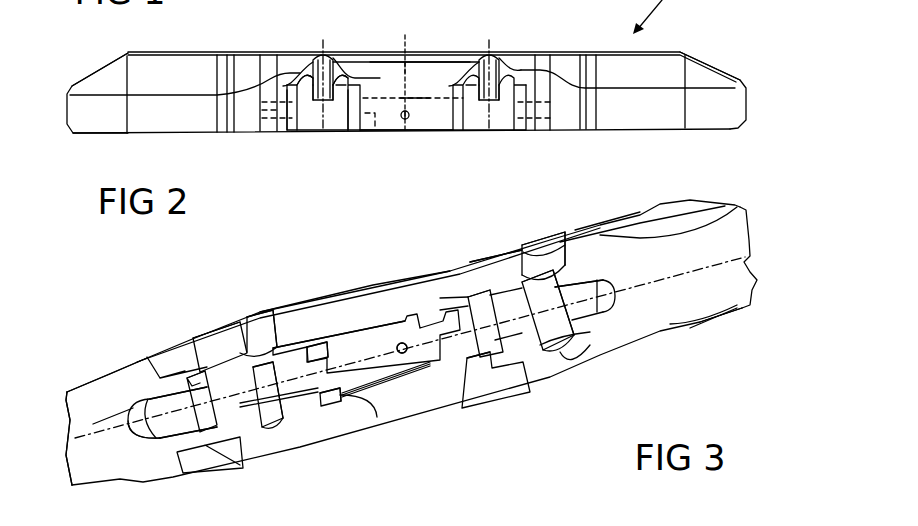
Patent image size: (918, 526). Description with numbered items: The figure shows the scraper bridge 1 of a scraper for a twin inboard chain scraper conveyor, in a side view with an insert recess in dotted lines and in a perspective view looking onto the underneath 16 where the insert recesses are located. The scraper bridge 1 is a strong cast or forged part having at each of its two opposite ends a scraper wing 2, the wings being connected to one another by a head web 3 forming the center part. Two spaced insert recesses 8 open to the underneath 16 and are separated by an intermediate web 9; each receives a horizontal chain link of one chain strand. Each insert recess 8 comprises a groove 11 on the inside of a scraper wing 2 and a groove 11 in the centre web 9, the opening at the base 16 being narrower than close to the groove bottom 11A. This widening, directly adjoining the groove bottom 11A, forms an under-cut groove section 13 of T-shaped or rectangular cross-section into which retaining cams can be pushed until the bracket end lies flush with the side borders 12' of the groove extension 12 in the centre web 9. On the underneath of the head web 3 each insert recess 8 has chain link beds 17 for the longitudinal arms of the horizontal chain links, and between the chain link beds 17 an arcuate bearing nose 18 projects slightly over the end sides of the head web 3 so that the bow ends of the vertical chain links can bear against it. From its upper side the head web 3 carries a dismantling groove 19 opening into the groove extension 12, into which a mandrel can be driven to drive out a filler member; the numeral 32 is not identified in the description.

In FIG. 3, the scraper bridge 1 is at (672, 359).
In FIG. 2, the scraper wing 2 is at (173, 75).
In FIG. 3, the scraper wing 2 is at (97, 440).
In FIG. 2, the head web 3 is at (427, 92).
In FIG. 2, the insert recess 8 is at (346, 132).
In FIG. 3, the insert recess 8 is at (507, 275).
In FIG. 2, the intermediate web 9 is at (382, 86).
In FIG. 3, the intermediate web 9 is at (404, 401).
In FIG. 2, the groove 11 is at (362, 127).
In FIG. 3, the groove 11 is at (158, 440).
In FIG. 3, the groove bottom 11A is at (175, 405).
In FIG. 2, the groove extension 12 is at (406, 159).
In FIG. 3, the groove extension 12 is at (352, 279).
In FIG. 3, the side border of the groove extension 12' is at (353, 430).
In FIG. 2, the under-cut groove section 13 is at (270, 115).
In FIG. 3, the under-cut groove section 13 is at (332, 360).
In FIG. 3, the underneath 16 is at (133, 387).
In FIG. 2, the chain link bed 17 is at (300, 66).
In FIG. 2, the bearing nose 18 is at (322, 67).
In FIG. 3, the bearing nose 18 is at (262, 327).
In FIG. 2, the dismantling groove 19 is at (408, 70).
In FIG. 3, the dismantling groove 19 is at (407, 354).
In FIG. 3, the edge 32 is at (367, 290).